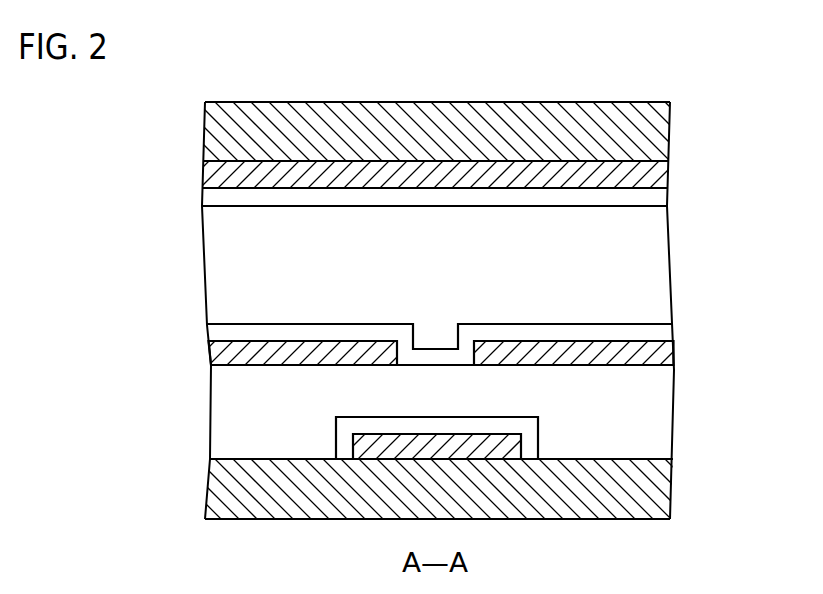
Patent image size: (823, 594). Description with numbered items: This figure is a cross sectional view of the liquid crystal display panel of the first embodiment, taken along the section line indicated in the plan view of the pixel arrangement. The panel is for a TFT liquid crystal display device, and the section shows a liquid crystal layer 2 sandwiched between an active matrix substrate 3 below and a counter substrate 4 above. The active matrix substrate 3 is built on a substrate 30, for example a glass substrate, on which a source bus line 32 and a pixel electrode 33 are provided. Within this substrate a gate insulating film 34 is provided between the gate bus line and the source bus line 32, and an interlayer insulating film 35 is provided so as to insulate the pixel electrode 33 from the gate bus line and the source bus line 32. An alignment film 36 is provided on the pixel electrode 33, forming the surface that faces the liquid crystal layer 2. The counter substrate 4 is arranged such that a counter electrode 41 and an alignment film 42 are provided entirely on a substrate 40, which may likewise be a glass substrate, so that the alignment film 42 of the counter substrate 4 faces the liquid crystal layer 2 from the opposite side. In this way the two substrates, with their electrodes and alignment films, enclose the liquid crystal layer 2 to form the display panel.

The liquid crystal layer 2 is at (658, 262).
The active matrix substrate 3 is at (734, 308).
The counter substrate 4 is at (724, 108).
The substrate 30 is at (665, 493).
The source bus line 32 is at (512, 443).
The pixel electrode 33 is at (665, 357).
The gate insulating film 34 is at (530, 423).
The interlayer insulating film 35 is at (666, 386).
The alignment film 36 is at (663, 331).
The substrate 40 is at (658, 129).
The counter electrode 41 is at (658, 170).
The alignment film 42 is at (658, 196).